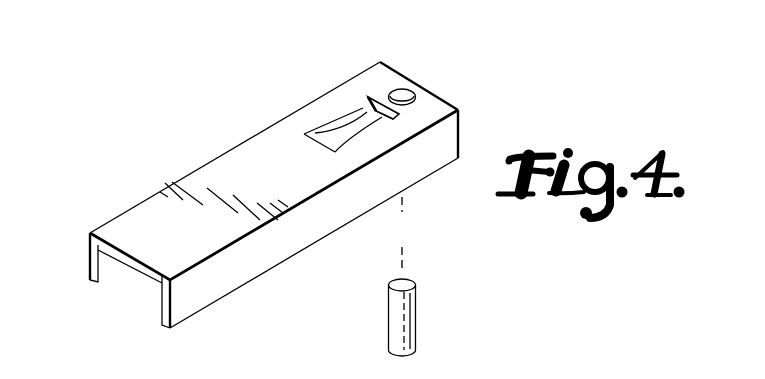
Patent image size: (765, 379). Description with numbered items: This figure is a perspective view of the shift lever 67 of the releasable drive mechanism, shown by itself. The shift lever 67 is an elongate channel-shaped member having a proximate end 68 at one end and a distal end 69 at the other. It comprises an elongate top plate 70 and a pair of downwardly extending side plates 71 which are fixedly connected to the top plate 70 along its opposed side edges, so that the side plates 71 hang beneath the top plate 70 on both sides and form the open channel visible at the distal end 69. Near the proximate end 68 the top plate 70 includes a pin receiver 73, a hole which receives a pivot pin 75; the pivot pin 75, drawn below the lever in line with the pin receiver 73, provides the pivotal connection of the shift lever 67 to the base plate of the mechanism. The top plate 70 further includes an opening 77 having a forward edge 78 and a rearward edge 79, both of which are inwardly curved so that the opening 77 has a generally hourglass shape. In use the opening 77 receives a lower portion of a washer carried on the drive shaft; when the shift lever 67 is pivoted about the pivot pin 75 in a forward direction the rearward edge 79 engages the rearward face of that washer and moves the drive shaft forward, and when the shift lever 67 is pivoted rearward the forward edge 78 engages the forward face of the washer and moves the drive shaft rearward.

The shift lever 67 is at (427, 190).
The proximate end 68 is at (448, 103).
The distal end 69 is at (135, 264).
The top plate 70 is at (270, 145).
The side plates 71 is at (88, 259).
The pin receiver 73 is at (405, 92).
The pivot pin 75 is at (388, 323).
The opening 77 is at (375, 96).
The forward edge 78 is at (331, 133).
The rearward edge 79 is at (382, 118).